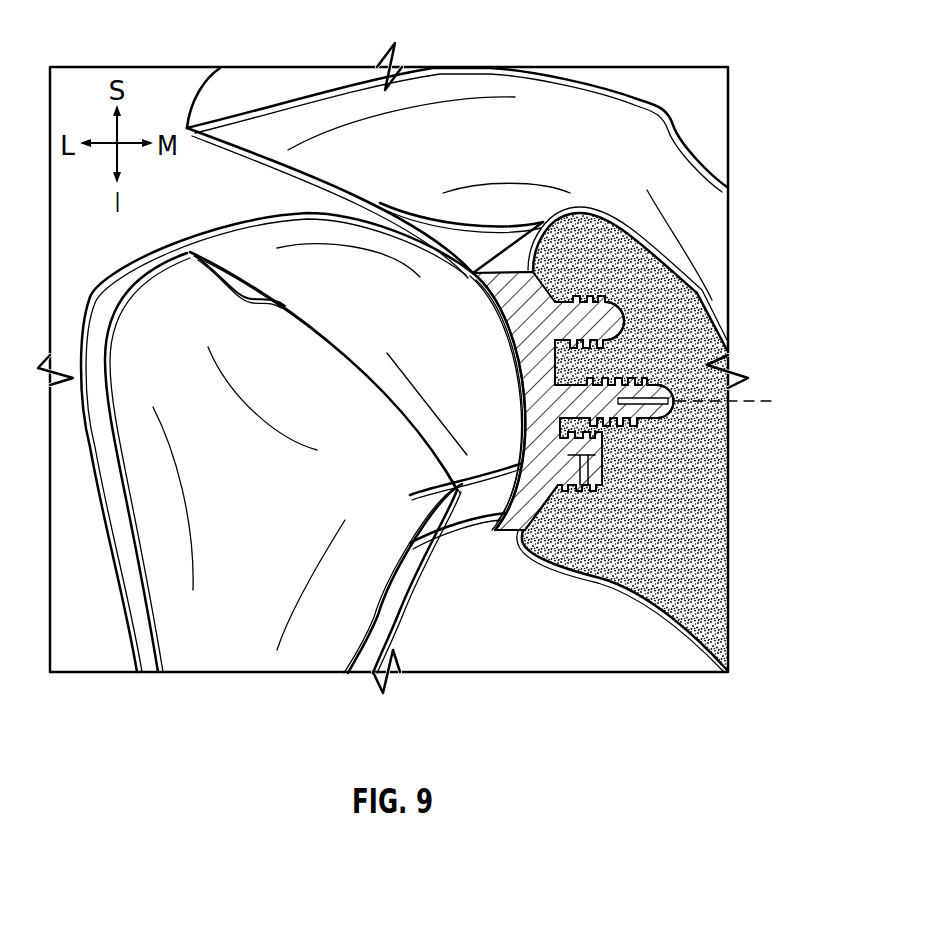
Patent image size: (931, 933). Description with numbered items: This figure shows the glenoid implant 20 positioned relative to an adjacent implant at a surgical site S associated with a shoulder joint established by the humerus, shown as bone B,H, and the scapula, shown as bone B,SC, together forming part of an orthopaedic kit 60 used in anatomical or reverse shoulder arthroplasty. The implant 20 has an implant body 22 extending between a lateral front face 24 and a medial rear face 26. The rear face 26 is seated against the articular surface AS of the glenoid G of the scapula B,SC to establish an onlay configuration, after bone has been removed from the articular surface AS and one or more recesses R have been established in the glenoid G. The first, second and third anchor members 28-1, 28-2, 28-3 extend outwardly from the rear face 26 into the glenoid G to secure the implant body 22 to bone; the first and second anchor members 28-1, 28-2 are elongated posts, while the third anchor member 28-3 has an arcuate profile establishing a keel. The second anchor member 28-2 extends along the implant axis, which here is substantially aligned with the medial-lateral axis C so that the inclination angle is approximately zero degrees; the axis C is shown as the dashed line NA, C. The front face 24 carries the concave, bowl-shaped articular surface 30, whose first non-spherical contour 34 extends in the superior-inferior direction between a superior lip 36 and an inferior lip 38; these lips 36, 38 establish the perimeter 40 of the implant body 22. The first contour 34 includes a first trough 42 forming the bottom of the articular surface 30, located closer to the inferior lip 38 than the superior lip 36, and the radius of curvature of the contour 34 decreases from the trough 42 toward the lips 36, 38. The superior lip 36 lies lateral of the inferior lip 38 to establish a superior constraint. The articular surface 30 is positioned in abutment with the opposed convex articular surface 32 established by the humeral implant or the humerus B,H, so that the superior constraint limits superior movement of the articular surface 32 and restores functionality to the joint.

The implant 20 is at (638, 506).
The implant body 22 is at (418, 539).
The front face 24 is at (433, 488).
The articular surface 30 is at (455, 485).
The rear face 26 is at (545, 556).
The first anchor member 28-1 is at (620, 318).
The second anchor member 28-2 is at (670, 418).
The third anchor member 28-3 is at (599, 490).
The articular surface 32 is at (334, 213).
The first contour 34 is at (515, 336).
The superior lip 36 is at (477, 270).
The inferior lip 38 is at (492, 547).
The perimeter 40 is at (504, 548).
The first trough 42 is at (525, 395).
The orthopaedic kit 60 is at (565, 103).
The surgical site S is at (152, 82).
The articular surface AS is at (503, 303).
The recess R is at (560, 467).
The neutral axis NA is at (771, 384).
The axis C is at (770, 398).
The glenoid G is at (671, 472).
The bone, humerus B,H is at (193, 648).
The bone, scapula B,SC is at (697, 540).